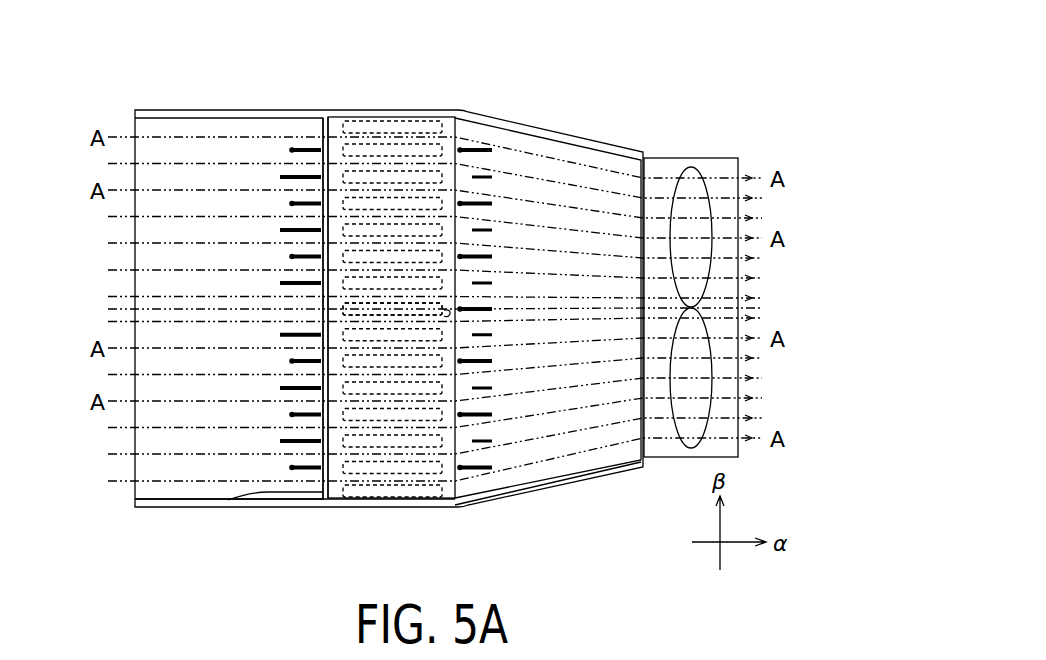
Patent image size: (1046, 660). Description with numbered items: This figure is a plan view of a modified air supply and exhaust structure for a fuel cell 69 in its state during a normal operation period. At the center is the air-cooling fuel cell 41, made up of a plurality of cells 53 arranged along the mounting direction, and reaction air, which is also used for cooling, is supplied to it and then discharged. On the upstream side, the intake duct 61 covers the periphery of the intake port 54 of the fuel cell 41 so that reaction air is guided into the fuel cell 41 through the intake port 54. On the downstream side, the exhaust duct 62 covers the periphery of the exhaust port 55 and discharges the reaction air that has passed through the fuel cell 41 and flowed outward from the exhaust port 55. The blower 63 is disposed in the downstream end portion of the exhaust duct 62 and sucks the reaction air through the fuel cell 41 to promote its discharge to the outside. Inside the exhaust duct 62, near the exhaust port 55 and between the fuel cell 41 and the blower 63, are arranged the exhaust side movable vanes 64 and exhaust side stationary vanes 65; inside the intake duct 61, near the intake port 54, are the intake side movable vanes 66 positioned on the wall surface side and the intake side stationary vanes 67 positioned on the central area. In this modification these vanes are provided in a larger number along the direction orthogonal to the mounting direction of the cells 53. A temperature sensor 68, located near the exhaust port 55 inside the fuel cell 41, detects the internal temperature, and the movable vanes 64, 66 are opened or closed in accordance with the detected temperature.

The air-cooling fuel cell 41 is at (418, 117).
The cells 53 is at (372, 126).
The intake port 54 is at (322, 447).
The exhaust port 55 is at (469, 116).
The intake duct 61 is at (185, 508).
The exhaust duct 62 is at (613, 472).
The blower 63 is at (695, 159).
The exhaust side movable vane 64 is at (468, 520).
The exhaust side stationary vane 65 is at (484, 177).
The intake side movable vane 66 is at (292, 150).
The intake side stationary vane 67 is at (288, 176).
The temperature sensor 68 is at (446, 318).
The air supply and exhaust structure for a fuel cell 69 is at (686, 80).